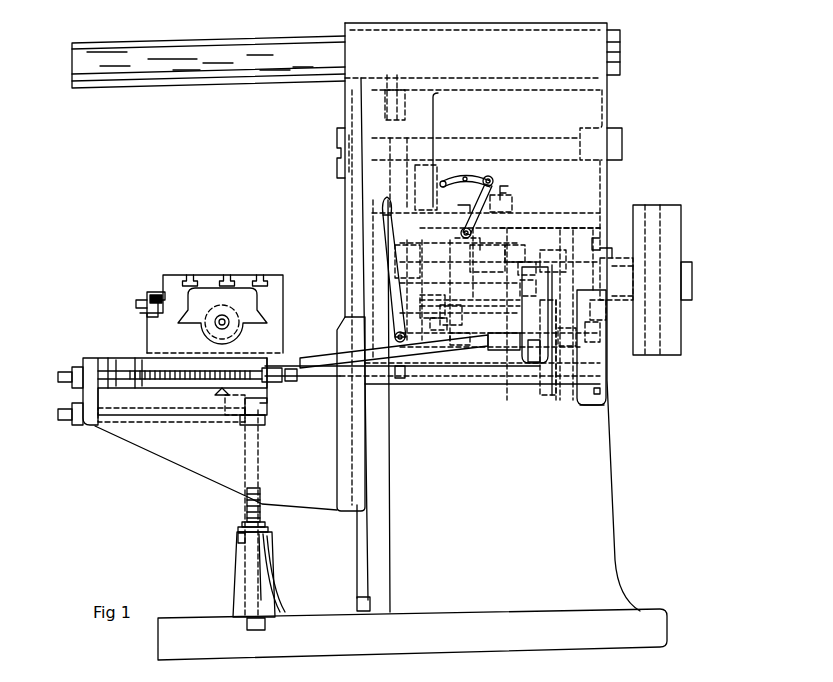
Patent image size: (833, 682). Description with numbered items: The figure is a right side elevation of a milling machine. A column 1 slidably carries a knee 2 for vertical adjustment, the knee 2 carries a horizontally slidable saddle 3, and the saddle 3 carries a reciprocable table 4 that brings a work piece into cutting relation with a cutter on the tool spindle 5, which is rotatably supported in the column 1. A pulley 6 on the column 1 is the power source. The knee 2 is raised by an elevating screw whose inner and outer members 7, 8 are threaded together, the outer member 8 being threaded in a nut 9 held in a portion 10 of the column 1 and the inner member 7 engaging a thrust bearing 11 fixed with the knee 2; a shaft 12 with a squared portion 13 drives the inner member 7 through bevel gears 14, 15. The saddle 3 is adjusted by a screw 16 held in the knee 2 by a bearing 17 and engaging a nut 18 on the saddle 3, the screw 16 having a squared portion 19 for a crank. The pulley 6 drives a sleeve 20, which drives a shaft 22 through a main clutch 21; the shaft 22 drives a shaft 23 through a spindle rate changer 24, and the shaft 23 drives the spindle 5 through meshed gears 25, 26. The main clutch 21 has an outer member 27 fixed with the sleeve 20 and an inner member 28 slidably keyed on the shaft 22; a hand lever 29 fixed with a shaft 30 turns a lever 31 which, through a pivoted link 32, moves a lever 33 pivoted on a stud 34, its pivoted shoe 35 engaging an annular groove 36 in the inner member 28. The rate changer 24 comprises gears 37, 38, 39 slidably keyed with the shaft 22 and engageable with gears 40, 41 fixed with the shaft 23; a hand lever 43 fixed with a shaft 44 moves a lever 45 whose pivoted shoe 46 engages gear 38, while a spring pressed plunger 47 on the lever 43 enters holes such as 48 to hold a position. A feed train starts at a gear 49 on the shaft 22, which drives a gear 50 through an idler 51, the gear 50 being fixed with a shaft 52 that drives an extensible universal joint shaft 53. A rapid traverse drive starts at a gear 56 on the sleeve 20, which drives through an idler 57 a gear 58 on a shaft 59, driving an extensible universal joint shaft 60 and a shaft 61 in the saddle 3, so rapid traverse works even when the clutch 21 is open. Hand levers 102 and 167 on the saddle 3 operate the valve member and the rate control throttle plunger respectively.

The column 1 is at (609, 470).
The knee 2 is at (141, 446).
The saddle 3 is at (283, 333).
The table 4 is at (272, 286).
The tool spindle 5 is at (337, 136).
The pulley 6 is at (670, 224).
The inner member of elevating screw 7 is at (262, 508).
The outer member of elevating screw 8 is at (277, 586).
The nut 9 is at (238, 536).
The portion of column 10 is at (234, 576).
The thrust bearing 11 is at (268, 406).
The shaft 12 is at (110, 418).
The squared portion of shaft 13 is at (60, 417).
The bevel gear 14 is at (222, 420).
The bevel gear 15 is at (243, 430).
The screw 16 is at (118, 360).
The hand lever 167 is at (135, 360).
The bearing 17 is at (100, 358).
The nut 18 is at (168, 379).
The squared portion of screw 19 is at (60, 373).
The sleeve 20 is at (626, 263).
The main clutch 21 is at (592, 250).
The shaft 22 is at (506, 300).
The shaft 23 is at (555, 228).
The spindle rate changer 24 is at (496, 206).
The gear 25 is at (407, 261).
The gear 26 is at (441, 95).
The outer clutch member 27 is at (556, 262).
The inner clutch member 28 is at (518, 250).
The hand lever 29 is at (383, 212).
The shaft 30 is at (412, 338).
The lever 31 is at (392, 356).
The pivoted link 32 is at (477, 378).
The lever 33 is at (556, 372).
The stud 34 is at (546, 330).
The pivoted shoe 35 is at (528, 286).
The annular groove 36 is at (527, 264).
The gear 37 is at (427, 322).
The gear 38 is at (450, 335).
The gear 39 is at (445, 318).
The gear 40 is at (423, 187).
The gear 41 is at (462, 205).
The hand lever 43 is at (480, 172).
The shaft 44 is at (475, 233).
The lever 45 is at (487, 258).
The pivoted shoe 46 is at (430, 306).
The spring pressed plunger 47 is at (494, 178).
The hole 48 is at (446, 180).
The gear 49 is at (510, 334).
The gear 50 is at (528, 366).
The idler 51 is at (516, 366).
The shaft 52 is at (555, 398).
The extensible universal joint shaft 53 is at (398, 379).
The gear 56 is at (599, 312).
The idler 57 is at (599, 338).
The gear 58 is at (603, 393).
The shaft 59 is at (584, 405).
The extensible universal joint shaft 60 is at (455, 386).
The shaft 61 is at (272, 382).
The hand lever 102 is at (150, 292).